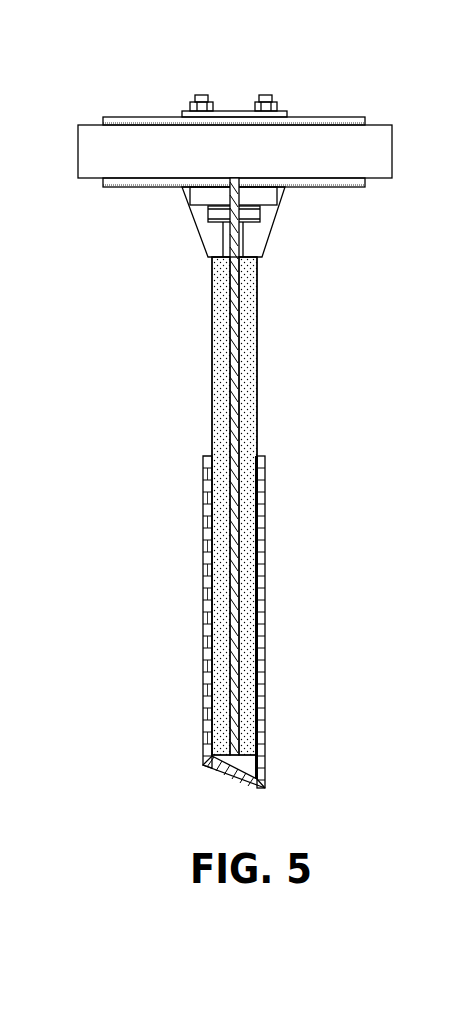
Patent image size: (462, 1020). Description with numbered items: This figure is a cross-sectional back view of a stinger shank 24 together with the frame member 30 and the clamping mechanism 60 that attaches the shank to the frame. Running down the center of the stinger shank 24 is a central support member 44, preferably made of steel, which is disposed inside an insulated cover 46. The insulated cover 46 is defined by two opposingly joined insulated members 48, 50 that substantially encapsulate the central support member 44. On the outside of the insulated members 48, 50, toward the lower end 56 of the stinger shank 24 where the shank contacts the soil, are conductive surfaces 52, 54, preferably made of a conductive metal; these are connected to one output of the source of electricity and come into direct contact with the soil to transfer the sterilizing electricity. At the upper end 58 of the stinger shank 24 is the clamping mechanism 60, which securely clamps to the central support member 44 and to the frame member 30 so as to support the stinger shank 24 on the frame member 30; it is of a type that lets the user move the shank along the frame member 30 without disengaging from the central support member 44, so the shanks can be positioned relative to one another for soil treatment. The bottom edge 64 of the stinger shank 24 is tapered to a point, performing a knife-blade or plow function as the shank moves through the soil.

The stinger shank 24 is at (244, 502).
The frame member 30 is at (380, 142).
The central support member 44 is at (232, 350).
The insulated cover 46 is at (200, 309).
The insulated member 48 is at (220, 400).
The insulated member 50 is at (248, 420).
The conductive surface 52 is at (203, 530).
The conductive surface 54 is at (258, 605).
The lower end 56 is at (186, 752).
The upper end 58 is at (172, 227).
The clamping mechanism 60 is at (296, 108).
The bottom edge 64 is at (227, 774).